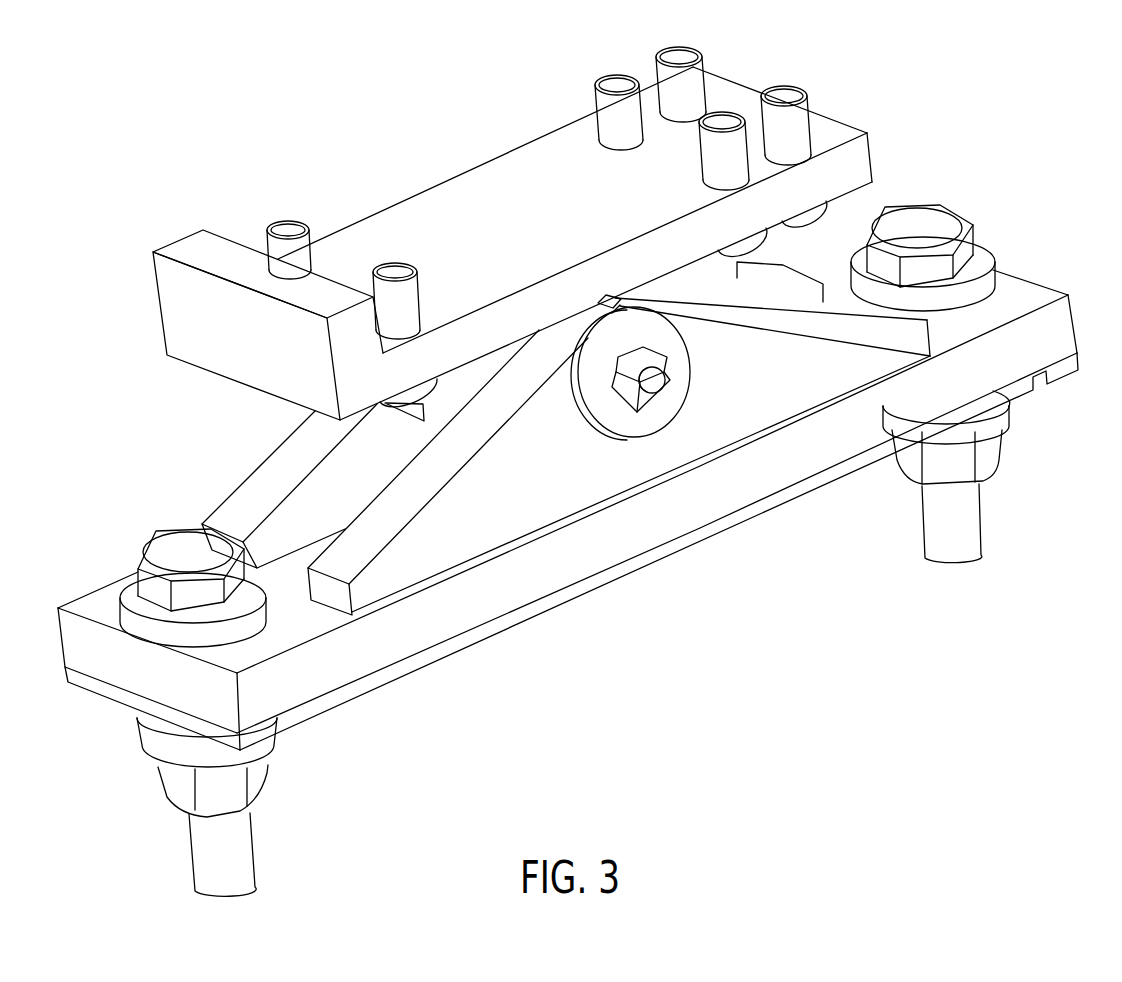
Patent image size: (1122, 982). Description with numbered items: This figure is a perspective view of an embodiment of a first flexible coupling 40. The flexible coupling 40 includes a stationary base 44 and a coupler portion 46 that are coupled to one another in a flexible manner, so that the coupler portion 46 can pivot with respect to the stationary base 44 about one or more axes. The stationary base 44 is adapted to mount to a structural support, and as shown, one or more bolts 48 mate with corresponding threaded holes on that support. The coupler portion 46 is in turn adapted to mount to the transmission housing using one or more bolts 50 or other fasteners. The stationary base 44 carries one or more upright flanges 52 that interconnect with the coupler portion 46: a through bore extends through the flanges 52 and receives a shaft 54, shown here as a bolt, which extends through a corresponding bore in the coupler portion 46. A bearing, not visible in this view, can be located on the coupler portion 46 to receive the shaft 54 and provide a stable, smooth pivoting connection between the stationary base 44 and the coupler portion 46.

The first flexible coupling 40 is at (1067, 92).
The stationary base 44 is at (701, 510).
The coupler portion 46 is at (862, 160).
The bolts 48 is at (978, 532).
The bolts 50 is at (690, 68).
The upright flanges 52 is at (258, 487).
The shaft 54 is at (659, 390).